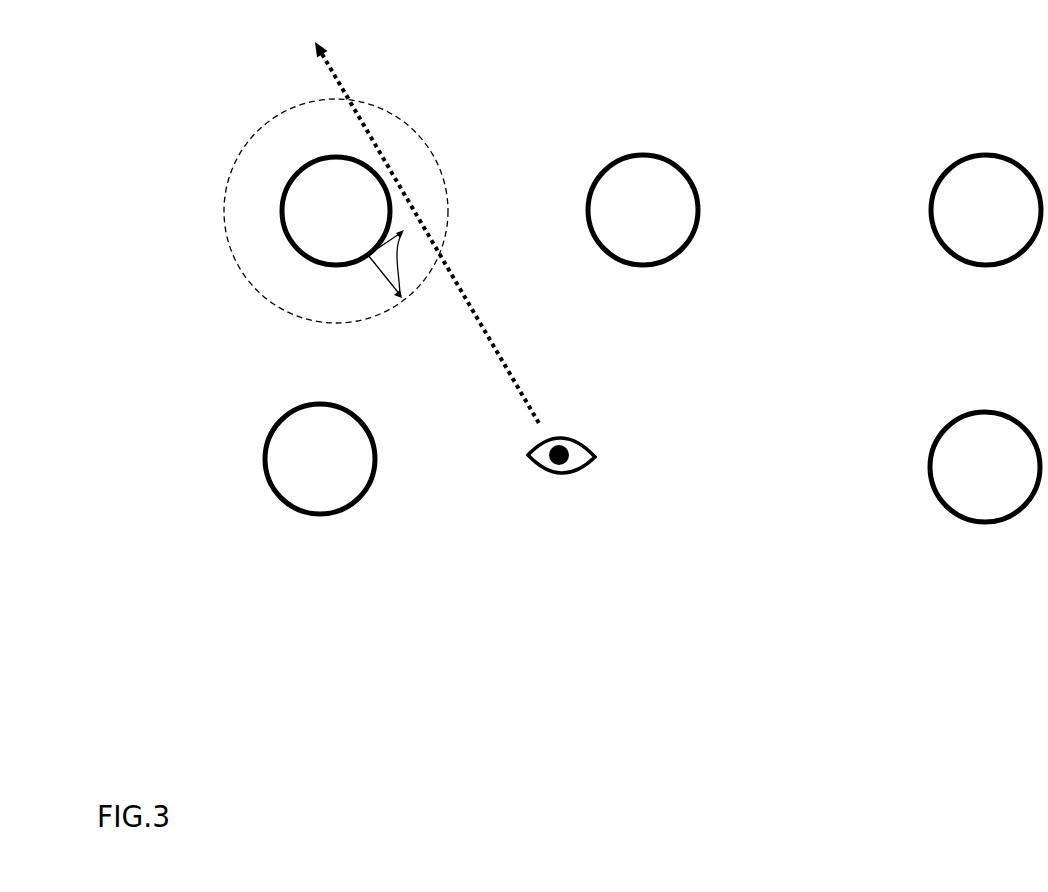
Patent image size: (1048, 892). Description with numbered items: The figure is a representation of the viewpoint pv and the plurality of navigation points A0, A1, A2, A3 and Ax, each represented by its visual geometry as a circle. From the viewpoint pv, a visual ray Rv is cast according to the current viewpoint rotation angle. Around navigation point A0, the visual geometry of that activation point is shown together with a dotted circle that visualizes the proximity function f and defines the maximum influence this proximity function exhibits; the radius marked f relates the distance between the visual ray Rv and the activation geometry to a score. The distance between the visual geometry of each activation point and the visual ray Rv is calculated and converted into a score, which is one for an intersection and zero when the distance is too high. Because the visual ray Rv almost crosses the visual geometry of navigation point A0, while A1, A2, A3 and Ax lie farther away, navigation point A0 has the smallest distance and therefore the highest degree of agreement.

The navigation point A0 is at (336, 211).
The navigation point A1 is at (643, 210).
The navigation point A2 is at (986, 210).
The navigation point A3 is at (320, 459).
The navigation point Ax is at (985, 467).
The proximity function f is at (385, 265).
The visual ray Rv is at (427, 233).
The viewpoint pv is at (561, 469).